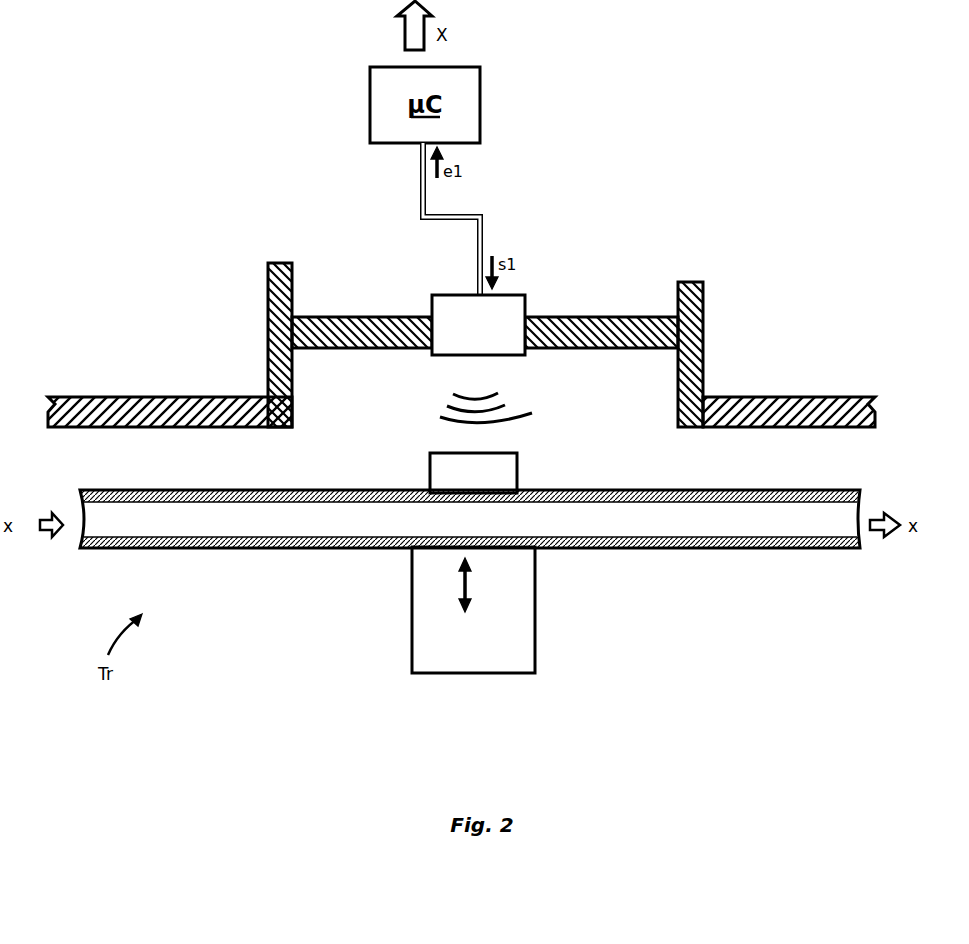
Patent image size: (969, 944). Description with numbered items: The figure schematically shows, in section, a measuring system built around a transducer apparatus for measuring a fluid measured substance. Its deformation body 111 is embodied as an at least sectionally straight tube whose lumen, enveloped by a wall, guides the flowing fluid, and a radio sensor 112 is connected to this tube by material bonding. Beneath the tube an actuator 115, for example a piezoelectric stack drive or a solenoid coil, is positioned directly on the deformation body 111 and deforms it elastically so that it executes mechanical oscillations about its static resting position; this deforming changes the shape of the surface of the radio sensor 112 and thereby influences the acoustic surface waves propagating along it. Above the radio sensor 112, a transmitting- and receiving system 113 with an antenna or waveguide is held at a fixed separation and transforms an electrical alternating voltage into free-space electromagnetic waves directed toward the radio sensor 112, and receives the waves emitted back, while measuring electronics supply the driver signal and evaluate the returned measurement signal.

The deformation body 111 is at (450, 535).
The radio sensor 112 is at (452, 488).
The transmitting- and receiving system 113 is at (456, 338).
The actuator 115 is at (452, 659).